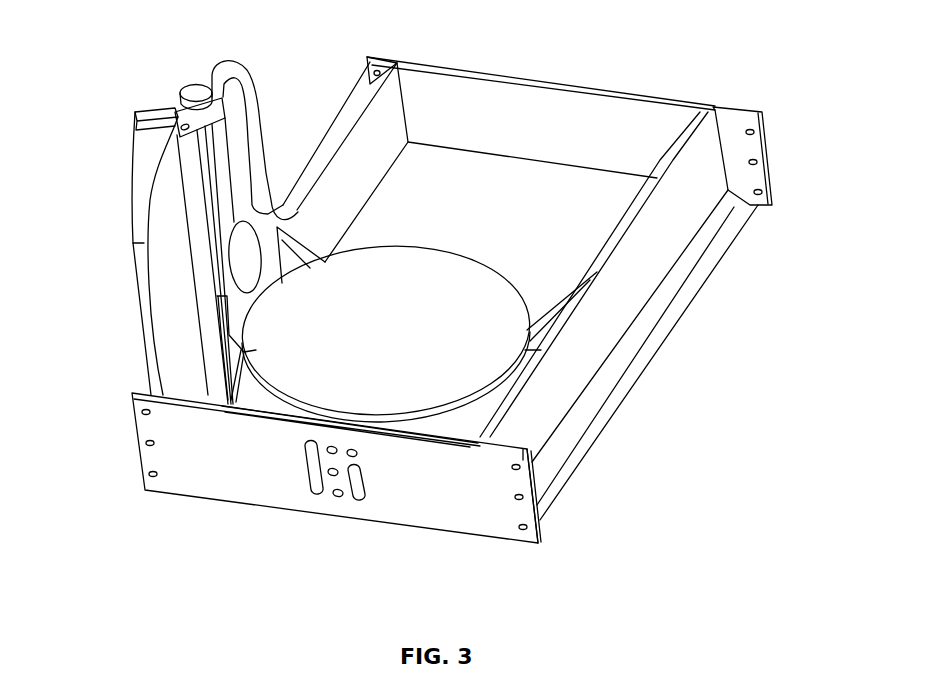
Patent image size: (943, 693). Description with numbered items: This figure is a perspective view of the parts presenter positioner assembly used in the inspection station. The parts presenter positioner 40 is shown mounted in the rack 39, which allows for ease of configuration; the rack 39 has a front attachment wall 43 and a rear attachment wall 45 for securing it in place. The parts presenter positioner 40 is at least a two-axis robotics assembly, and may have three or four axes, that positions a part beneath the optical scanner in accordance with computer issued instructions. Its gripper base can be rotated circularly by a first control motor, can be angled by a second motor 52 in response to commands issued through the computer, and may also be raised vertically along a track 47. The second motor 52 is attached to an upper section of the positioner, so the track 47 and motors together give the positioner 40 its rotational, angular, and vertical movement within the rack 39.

The rack 39 is at (687, 297).
The parts presenter positioner 40 is at (392, 231).
The front attachment wall 43 is at (527, 510).
The rear attachment wall 45 is at (750, 147).
The track 47 is at (225, 140).
The second motor 52 is at (143, 150).